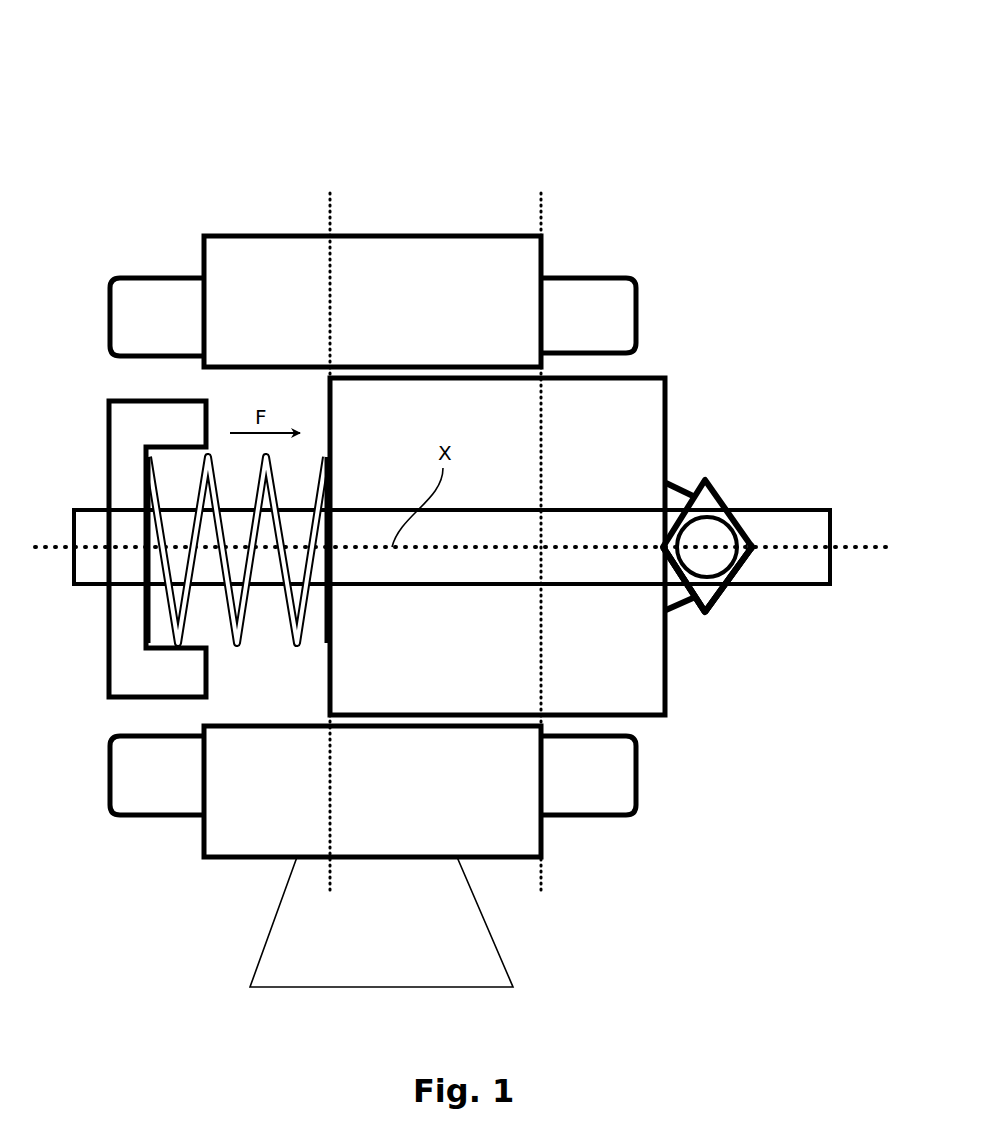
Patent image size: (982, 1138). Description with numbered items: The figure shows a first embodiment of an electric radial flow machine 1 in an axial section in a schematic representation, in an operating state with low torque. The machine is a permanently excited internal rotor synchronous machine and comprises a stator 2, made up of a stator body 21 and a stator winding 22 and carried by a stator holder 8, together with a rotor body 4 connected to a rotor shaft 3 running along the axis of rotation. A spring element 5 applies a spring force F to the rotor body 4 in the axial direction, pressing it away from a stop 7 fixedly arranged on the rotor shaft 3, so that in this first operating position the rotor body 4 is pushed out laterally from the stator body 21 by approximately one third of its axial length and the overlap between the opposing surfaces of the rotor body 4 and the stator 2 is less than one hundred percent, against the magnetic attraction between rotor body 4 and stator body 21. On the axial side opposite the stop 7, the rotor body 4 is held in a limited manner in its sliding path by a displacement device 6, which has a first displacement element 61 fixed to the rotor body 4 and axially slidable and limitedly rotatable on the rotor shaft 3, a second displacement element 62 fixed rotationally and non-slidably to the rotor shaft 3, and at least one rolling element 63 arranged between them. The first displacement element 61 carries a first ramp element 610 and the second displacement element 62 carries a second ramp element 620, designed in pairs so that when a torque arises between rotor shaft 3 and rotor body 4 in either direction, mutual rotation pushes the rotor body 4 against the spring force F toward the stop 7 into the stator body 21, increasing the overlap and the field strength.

The electric radial flow machine 1 is at (417, 123).
The stator 2 is at (430, 207).
The stator body 21 is at (388, 248).
The stator winding 22 is at (177, 297).
The rotor shaft 3 is at (760, 523).
The rotor body 4 is at (658, 373).
The spring element 5 is at (275, 482).
The displacement device 6 is at (718, 473).
The first displacement element 61 is at (697, 613).
The first ramp element 610 is at (697, 613).
The second displacement element 62 is at (720, 597).
The second ramp element 620 is at (720, 597).
The rolling element 63 is at (712, 547).
The stop 7 is at (130, 437).
The stator holder 8 is at (503, 948).